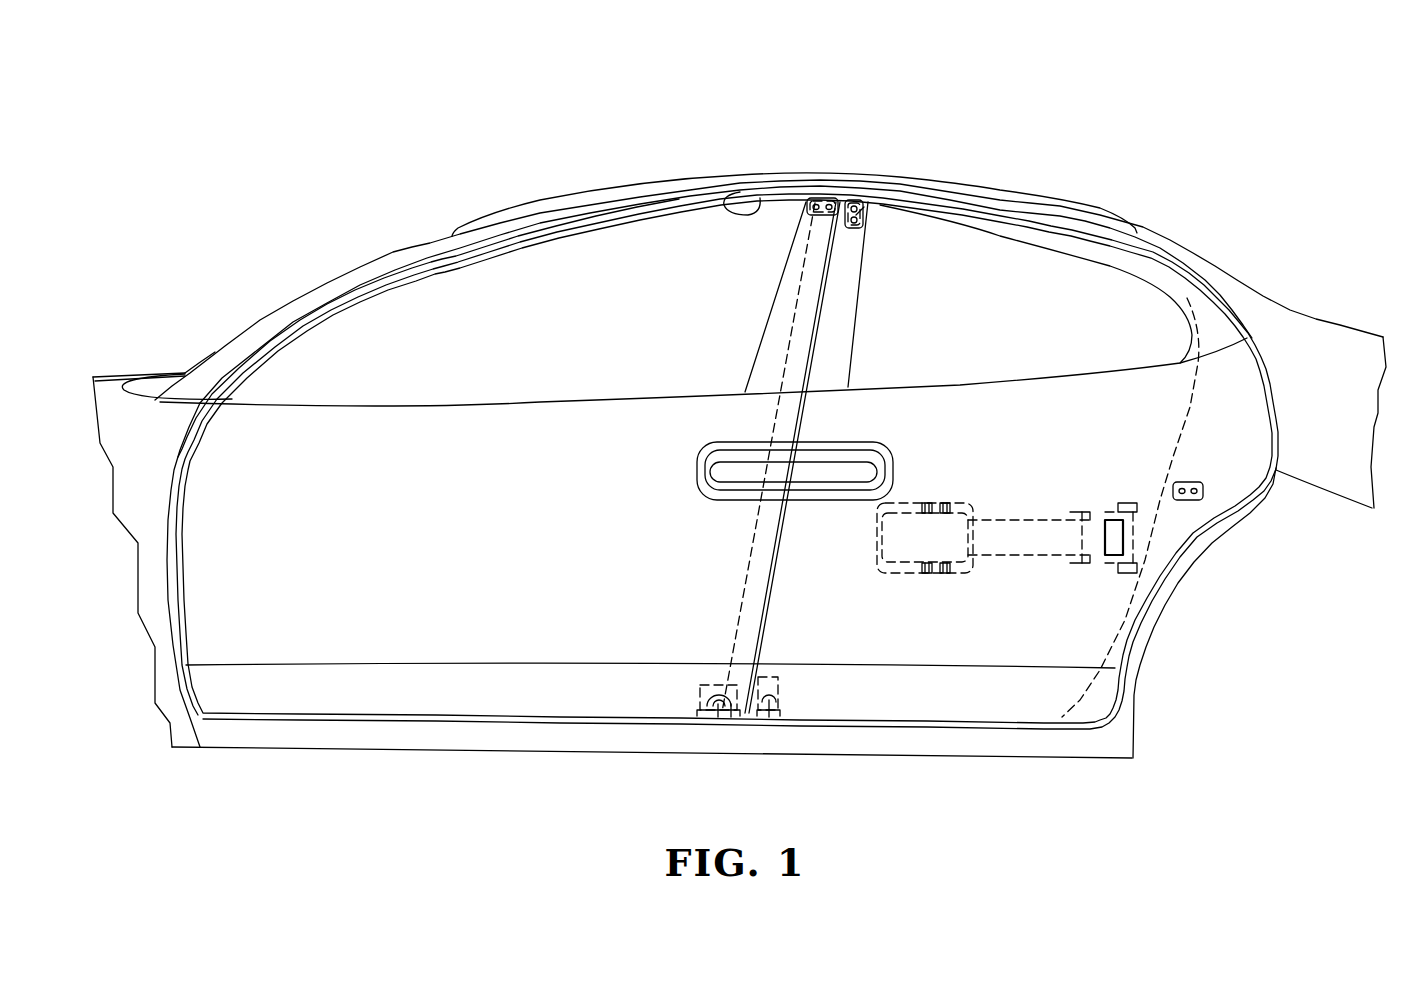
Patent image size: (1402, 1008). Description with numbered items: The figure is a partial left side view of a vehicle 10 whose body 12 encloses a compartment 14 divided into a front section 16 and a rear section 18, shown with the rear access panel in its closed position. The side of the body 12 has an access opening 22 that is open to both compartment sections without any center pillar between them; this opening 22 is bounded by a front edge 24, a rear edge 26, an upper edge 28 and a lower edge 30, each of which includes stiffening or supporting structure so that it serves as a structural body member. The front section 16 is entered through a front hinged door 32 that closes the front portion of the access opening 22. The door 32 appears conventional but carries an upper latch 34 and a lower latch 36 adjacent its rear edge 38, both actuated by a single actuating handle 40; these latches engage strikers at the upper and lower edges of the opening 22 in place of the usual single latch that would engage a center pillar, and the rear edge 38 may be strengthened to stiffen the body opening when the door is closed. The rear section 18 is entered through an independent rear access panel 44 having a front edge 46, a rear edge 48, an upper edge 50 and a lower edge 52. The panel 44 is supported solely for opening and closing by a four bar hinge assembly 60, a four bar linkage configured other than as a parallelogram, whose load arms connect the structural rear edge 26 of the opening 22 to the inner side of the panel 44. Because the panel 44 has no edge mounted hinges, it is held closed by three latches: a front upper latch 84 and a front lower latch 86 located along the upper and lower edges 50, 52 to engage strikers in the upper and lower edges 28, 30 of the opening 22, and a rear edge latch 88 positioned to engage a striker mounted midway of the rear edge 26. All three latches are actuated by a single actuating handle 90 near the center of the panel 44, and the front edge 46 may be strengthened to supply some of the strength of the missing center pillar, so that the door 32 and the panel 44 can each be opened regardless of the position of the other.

The vehicle 10 is at (380, 182).
The body 12 is at (516, 206).
The enclosed compartment 14 is at (775, 212).
The front section 16 is at (653, 233).
The rear section 18 is at (918, 252).
The access opening 22 is at (372, 318).
The front edge 24 is at (180, 578).
The rear edge 26 is at (1216, 510).
The upper edge 28 is at (740, 192).
The lower edge 30 is at (622, 713).
The front hinged door 32 is at (200, 643).
The upper latch 34 is at (828, 196).
The lower latch 36 is at (730, 717).
The rear edge of the door 38 is at (803, 418).
The actuating handle 40 is at (712, 472).
The independent rear access panel 44 is at (1128, 665).
The front edge 46 is at (780, 550).
The rear edge 48 is at (1268, 476).
The upper edge 50 is at (1023, 217).
The lower edge 52 is at (1000, 724).
The four bar hinge assembly 60 is at (1093, 567).
The front upper latch 84 is at (868, 212).
The front lower latch 86 is at (767, 717).
The rear edge latch 88 is at (1188, 500).
The actuating handle 90 is at (877, 470).